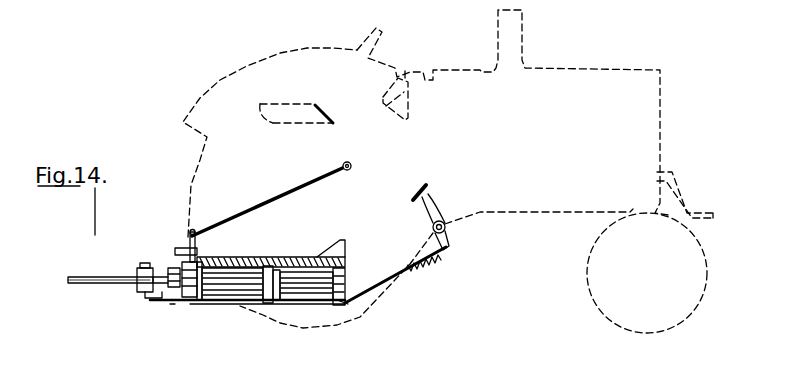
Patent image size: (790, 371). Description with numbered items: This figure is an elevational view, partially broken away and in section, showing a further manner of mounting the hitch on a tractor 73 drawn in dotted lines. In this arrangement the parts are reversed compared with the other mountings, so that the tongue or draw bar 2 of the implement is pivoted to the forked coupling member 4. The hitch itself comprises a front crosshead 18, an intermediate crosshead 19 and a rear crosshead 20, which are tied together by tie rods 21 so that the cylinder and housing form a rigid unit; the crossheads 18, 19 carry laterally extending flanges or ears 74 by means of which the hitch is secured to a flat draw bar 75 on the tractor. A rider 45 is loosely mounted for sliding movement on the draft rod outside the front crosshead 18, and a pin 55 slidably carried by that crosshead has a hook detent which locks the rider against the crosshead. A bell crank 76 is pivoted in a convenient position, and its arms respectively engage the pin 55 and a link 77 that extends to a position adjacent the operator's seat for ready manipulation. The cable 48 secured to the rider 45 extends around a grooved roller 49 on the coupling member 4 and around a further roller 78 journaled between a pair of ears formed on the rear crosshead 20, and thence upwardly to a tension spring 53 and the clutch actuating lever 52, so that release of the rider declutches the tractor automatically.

The tongue 2 is at (100, 283).
The forked coupling member 4 is at (142, 272).
The rider 45 is at (168, 272).
The grooved roller 49 is at (152, 298).
The front crosshead 18 is at (188, 300).
The intermediate crosshead 19 is at (240, 302).
The tie rods 21 is at (300, 283).
The rear crosshead 20 is at (337, 270).
The laterally extending flanges or ears 74 is at (202, 262).
The flat draw bar 75 is at (250, 258).
The bell crank 76 is at (185, 248).
The link 77 is at (305, 180).
The roller 78 is at (346, 302).
The cable 48 is at (393, 277).
The tension spring 53 is at (420, 264).
The actuating lever 52 is at (449, 238).
The tractor 73 is at (458, 68).
The pin 55 is at (168, 337).